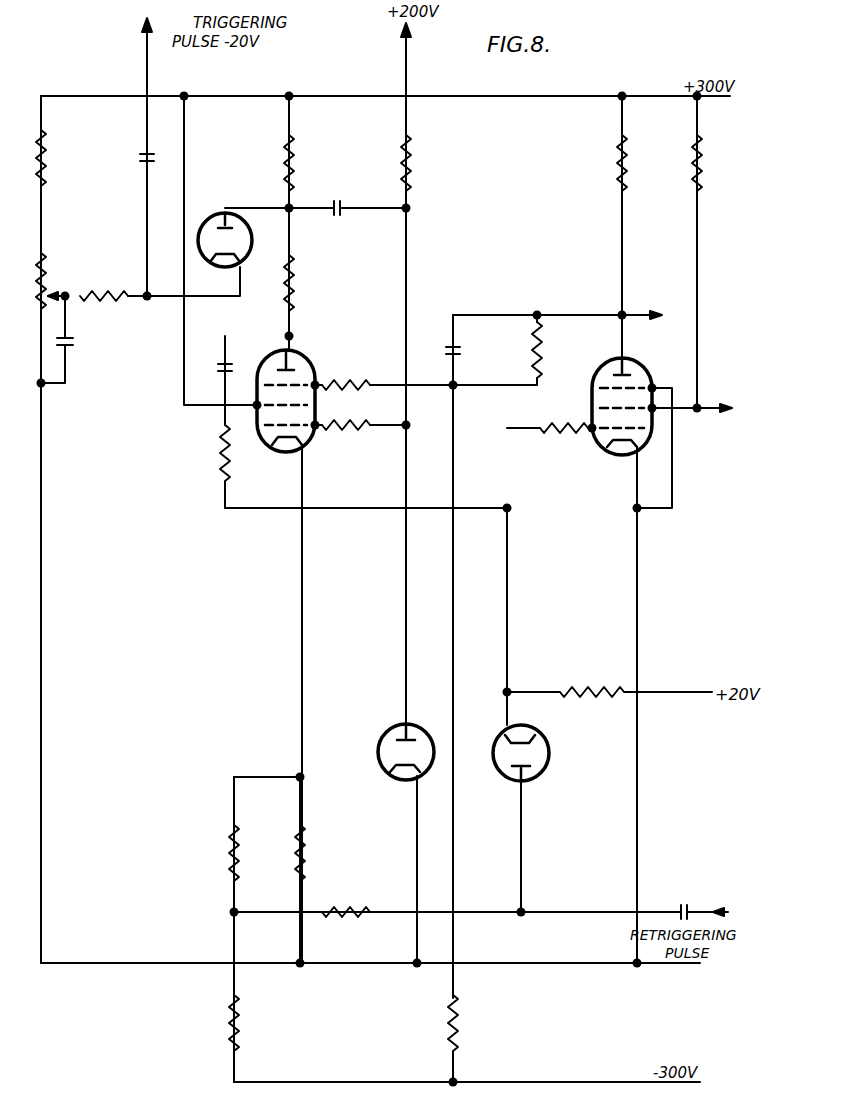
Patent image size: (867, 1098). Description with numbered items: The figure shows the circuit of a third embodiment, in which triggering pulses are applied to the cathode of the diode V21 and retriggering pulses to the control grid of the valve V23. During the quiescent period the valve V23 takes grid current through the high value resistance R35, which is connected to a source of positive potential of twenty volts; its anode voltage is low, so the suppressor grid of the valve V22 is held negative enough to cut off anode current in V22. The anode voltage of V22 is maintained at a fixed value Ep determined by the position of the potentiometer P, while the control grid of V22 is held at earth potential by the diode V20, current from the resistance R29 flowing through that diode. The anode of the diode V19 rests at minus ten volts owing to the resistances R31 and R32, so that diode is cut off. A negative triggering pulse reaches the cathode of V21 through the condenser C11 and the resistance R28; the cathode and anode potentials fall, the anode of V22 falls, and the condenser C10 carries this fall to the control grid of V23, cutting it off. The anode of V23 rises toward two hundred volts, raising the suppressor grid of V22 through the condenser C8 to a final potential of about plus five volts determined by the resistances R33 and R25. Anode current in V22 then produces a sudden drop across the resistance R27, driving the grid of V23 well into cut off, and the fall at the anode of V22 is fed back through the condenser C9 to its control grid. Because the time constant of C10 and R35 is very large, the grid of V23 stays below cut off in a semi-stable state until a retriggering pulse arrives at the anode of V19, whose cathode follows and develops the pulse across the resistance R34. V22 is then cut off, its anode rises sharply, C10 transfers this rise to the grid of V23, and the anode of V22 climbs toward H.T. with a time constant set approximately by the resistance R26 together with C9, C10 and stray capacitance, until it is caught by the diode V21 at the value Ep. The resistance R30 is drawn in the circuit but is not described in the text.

The resistance R25 is at (517, 350).
The resistance R26 is at (269, 163).
The resistance R27 is at (307, 283).
The resistance R28 is at (105, 286).
The resistance R29 is at (425, 165).
The resistor R30 is at (318, 853).
The resistance R31 is at (212, 853).
The resistance R32 is at (214, 1023).
The resistance R33 is at (469, 1038).
The resistance R34 is at (247, 466).
The resistance R35 is at (609, 682).
The condenser C8 is at (437, 350).
The condenser C9 is at (347, 200).
The condenser C10 is at (211, 380).
The condenser C11 is at (134, 158).
The diode V19 is at (531, 744).
The diode V20 is at (411, 743).
The diode V21 is at (224, 232).
The valve V22 is at (282, 397).
The valve V23 is at (634, 401).
The potentiometer P is at (34, 281).
The fixed anode voltage value Ep is at (61, 286).